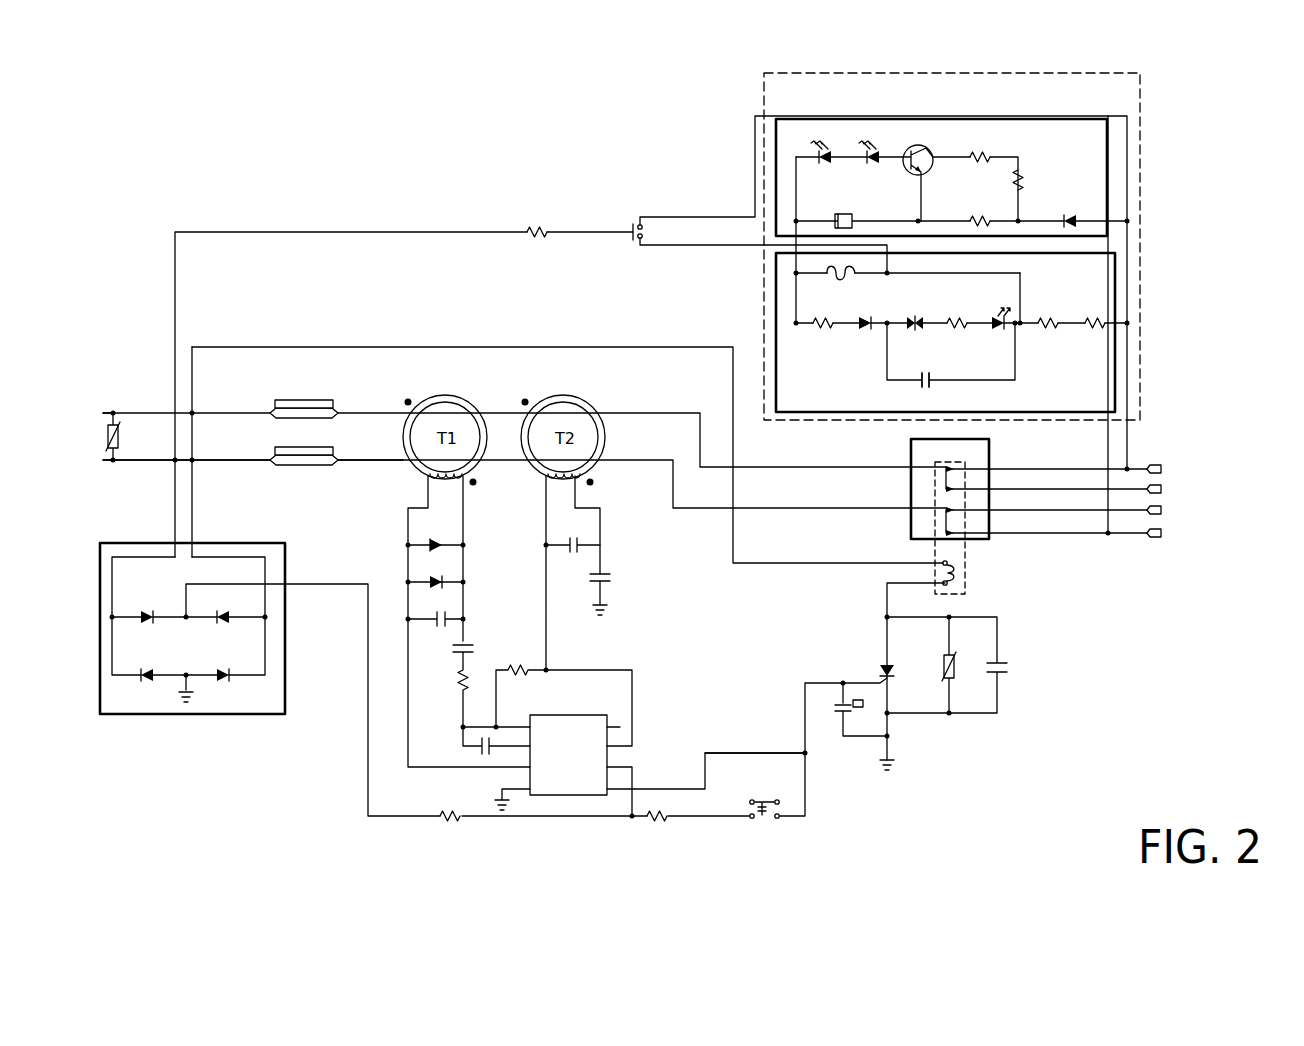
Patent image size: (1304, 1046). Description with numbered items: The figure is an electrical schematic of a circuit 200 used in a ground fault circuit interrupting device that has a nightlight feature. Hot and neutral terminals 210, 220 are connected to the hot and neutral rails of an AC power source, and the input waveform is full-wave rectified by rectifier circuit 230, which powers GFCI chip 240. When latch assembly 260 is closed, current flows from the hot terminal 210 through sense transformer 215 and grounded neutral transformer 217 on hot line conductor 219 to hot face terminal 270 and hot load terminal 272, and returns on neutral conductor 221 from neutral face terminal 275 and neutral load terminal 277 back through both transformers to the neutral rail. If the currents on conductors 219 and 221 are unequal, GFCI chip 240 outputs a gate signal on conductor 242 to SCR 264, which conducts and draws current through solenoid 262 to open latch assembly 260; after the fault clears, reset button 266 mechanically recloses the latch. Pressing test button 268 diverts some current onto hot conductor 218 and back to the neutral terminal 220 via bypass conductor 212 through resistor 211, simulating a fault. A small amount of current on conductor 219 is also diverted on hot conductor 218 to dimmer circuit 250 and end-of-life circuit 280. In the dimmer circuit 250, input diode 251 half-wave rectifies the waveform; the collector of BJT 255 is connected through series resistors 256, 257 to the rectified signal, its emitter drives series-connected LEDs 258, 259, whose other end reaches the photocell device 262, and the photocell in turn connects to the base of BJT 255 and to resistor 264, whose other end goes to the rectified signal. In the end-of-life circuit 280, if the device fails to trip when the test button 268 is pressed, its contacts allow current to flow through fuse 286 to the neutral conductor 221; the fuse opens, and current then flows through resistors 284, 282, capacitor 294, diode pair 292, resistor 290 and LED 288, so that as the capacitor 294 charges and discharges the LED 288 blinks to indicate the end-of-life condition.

The circuit 200 is at (366, 180).
The hot terminal 210 is at (103, 413).
The resistor 211 is at (537, 222).
The bypass conductor 212 is at (447, 232).
The sense transformer 215 is at (478, 400).
The grounded neutral transformer 217 is at (592, 403).
The hot conductor 218 is at (1127, 395).
The hot line conductor 219 is at (645, 413).
The neutral terminal 220 is at (103, 460).
The neutral conductor 221 is at (637, 461).
The rectifier circuit 230 is at (245, 714).
The GFCI chip 240 is at (572, 735).
The conductor 242 is at (763, 753).
The dimmer circuit 250 is at (1107, 168).
The input diode 251 is at (1070, 216).
The BJT 255 is at (915, 153).
The resistor 256 is at (980, 155).
The resistor 257 is at (1018, 182).
The LED 258 is at (876, 163).
The LED 259 is at (826, 163).
The latch assembly 260 is at (990, 466).
The solenoid 262 is at (852, 216).
The SCR 264 is at (980, 216).
The reset button 266 is at (825, 833).
The test button 268 is at (645, 232).
The hot face terminal 270 is at (1220, 466).
The hot load terminal 272 is at (1225, 490).
The neutral face terminal 275 is at (1222, 540).
The neutral load terminal 277 is at (1220, 512).
The end-of-life circuit 280 is at (1095, 255).
The resistor 282 is at (1049, 320).
The resistor 284 is at (1096, 320).
The fuse 286 is at (800, 285).
The LED 288 is at (1004, 306).
The resistor 290 is at (957, 320).
The diode pair 292 is at (916, 320).
The capacitor 294 is at (918, 380).